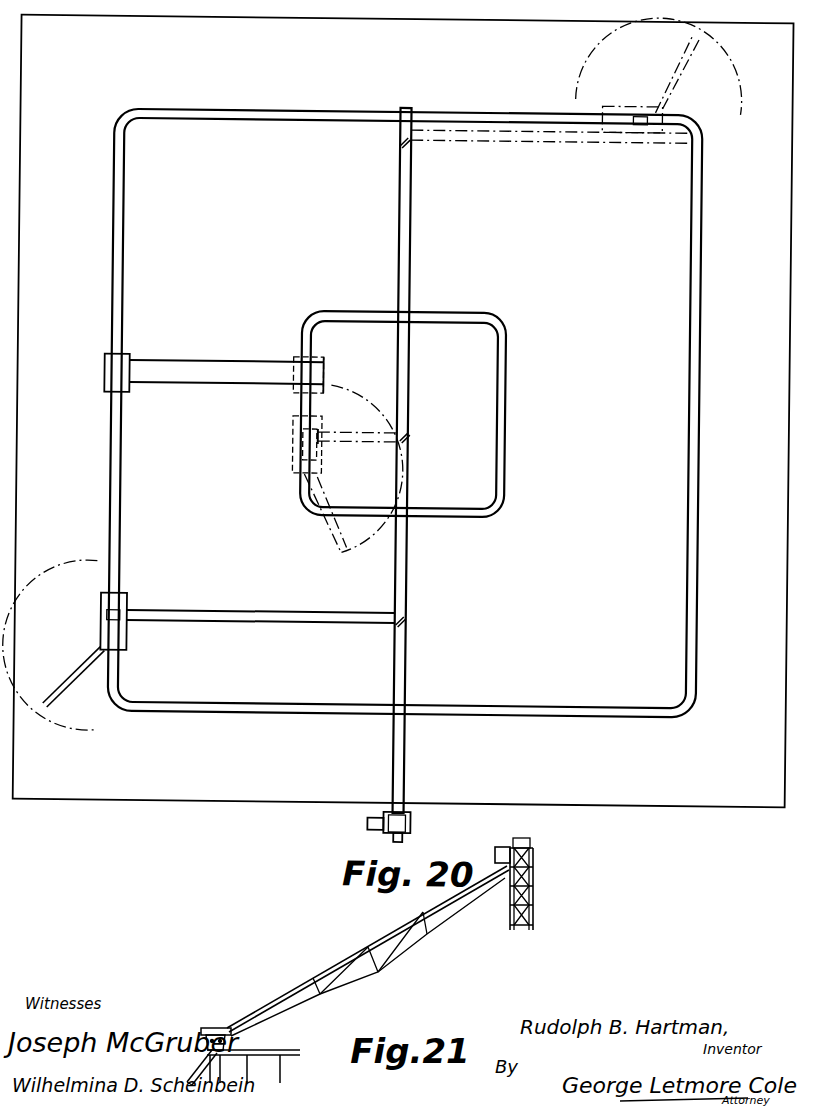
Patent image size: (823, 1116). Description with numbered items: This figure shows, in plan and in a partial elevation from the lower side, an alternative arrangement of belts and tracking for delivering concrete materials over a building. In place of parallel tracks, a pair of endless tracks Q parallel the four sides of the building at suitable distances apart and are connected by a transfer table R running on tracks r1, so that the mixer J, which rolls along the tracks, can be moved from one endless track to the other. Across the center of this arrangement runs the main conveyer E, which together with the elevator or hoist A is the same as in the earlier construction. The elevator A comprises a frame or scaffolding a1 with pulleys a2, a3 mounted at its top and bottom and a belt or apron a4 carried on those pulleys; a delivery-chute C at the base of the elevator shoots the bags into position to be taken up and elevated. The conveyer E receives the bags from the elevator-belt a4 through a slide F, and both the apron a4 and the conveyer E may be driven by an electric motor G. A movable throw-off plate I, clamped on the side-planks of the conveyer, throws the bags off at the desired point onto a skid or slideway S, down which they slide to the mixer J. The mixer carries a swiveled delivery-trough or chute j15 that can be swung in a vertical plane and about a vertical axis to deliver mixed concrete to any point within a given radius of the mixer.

In FIG. 20, the endless tracks Q is at (700, 462).
In FIG. 21, the endless tracks Q is at (299, 1043).
In FIG. 20, the conveyer-belt E is at (409, 572).
In FIG. 20, the skid or slideway S is at (587, 142).
In FIG. 21, the skid or slideway S is at (357, 953).
In FIG. 20, the mixer J is at (637, 105).
In FIG. 21, the mixer J is at (203, 1031).
In FIG. 20, the throw-off plate I is at (398, 142).
In FIG. 20, the transfer table R is at (127, 358).
In FIG. 20, the tracks r1 is at (200, 389).
In FIG. 20, the swiveled delivery-trough or chute j15 is at (61, 691).
In FIG. 21, the swiveled delivery-trough or chute j15 is at (200, 1067).
In FIG. 20, the slide F is at (406, 810).
In FIG. 20, the elevator or hoist A is at (415, 825).
In FIG. 21, the elevator or hoist A is at (535, 868).
In FIG. 20, the electric motor G is at (372, 826).
In FIG. 21, the electric motor G is at (496, 853).
In FIG. 20, the delivery-chute C is at (407, 840).
In FIG. 21, the frame or scaffolding a1 is at (510, 915).
In FIG. 20, the pulley a2 is at (385, 831).
In FIG. 21, the pulley a3 is at (533, 843).
In FIG. 21, the belt or apron a4 is at (535, 906).